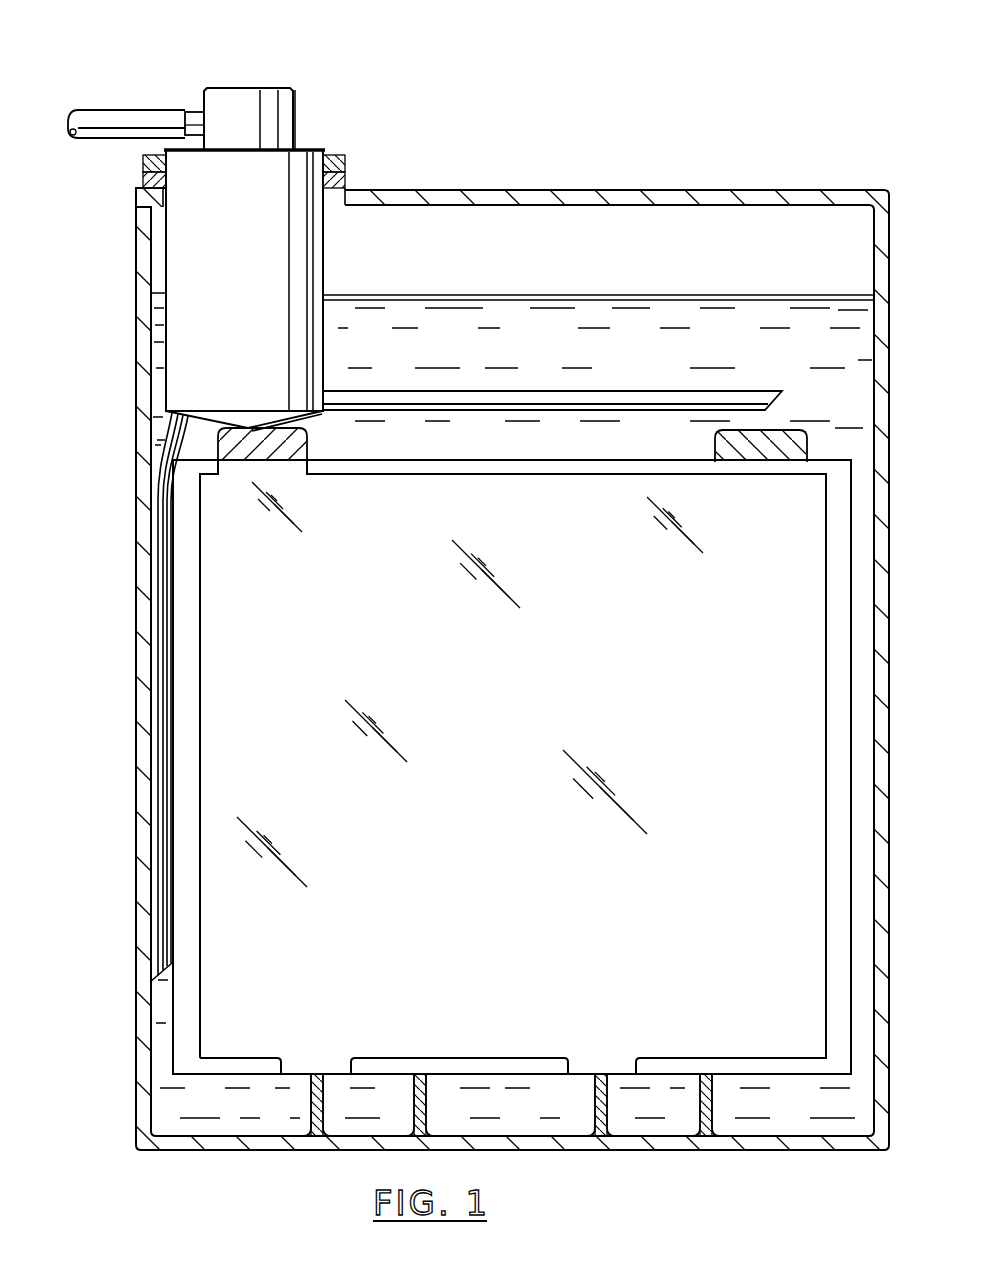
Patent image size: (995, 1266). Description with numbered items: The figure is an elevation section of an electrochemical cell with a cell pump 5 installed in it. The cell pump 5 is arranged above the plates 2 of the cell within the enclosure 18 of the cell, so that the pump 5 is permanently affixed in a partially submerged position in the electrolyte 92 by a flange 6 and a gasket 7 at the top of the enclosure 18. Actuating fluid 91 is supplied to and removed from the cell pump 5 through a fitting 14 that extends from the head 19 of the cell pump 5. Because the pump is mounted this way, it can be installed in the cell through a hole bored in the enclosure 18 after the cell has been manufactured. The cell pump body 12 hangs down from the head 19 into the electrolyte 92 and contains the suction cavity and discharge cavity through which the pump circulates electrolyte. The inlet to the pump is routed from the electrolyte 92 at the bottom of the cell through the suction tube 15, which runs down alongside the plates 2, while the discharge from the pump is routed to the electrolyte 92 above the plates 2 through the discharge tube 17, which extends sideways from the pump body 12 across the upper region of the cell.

The plates 2 is at (212, 637).
The cell pump 5 is at (218, 222).
The flange 6 is at (343, 166).
The gasket 7 is at (345, 183).
The cell pump body 12 is at (300, 167).
The fitting 14 is at (197, 117).
The suction tube 15 is at (170, 443).
The discharge tube 17 is at (483, 398).
The enclosure 18 is at (603, 190).
The head 19 is at (243, 107).
The actuating fluid 91 is at (40, 122).
The electrolyte 92 is at (692, 345).